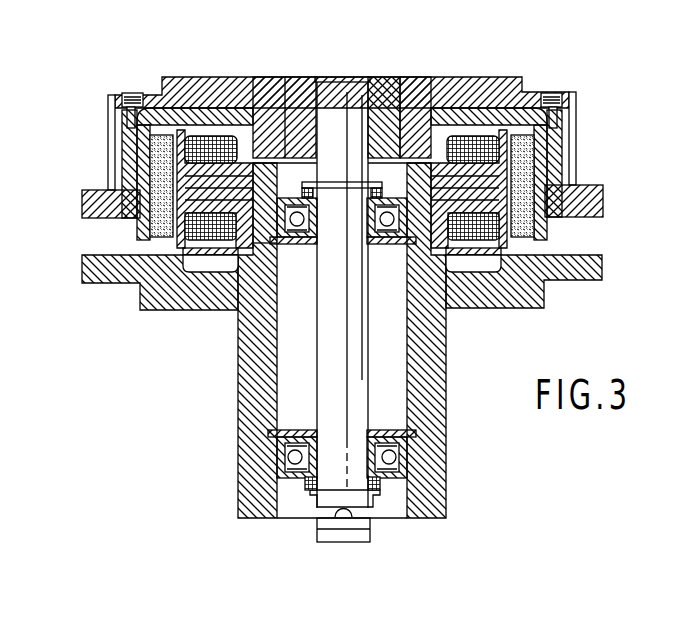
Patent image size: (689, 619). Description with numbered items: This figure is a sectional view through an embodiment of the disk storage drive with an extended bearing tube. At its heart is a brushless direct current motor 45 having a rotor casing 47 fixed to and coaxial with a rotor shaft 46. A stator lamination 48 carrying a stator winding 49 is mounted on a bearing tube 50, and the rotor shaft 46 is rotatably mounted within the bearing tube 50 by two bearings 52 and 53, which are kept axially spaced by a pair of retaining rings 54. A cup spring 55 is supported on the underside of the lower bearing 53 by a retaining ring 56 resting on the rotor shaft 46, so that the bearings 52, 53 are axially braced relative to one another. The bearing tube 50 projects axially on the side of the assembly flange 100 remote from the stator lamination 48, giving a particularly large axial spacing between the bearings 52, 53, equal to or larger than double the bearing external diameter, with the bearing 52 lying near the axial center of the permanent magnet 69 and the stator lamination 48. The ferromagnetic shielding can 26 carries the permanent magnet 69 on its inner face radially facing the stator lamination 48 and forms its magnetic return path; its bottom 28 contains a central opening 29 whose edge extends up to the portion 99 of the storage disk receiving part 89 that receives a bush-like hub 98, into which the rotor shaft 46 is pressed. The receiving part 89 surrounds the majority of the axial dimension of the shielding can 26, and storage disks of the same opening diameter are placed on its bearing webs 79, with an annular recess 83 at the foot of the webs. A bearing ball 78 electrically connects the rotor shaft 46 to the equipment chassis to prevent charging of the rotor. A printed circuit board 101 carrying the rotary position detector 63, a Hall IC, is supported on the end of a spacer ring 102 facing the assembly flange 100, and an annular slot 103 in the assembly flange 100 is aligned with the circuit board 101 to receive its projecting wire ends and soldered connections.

The shielding can 26 is at (140, 152).
The bottom of shielding can 28 is at (207, 112).
The central opening 29 is at (437, 95).
The brushless direct current motor 45 is at (578, 64).
The rotor shaft 46 is at (330, 90).
The rotor casing 47 is at (98, 98).
The stator lamination 48 is at (520, 180).
The stator winding 49 is at (480, 140).
The bearing tube 50 is at (238, 443).
The bearing 52 is at (312, 245).
The bearing 53 is at (407, 458).
The retaining rings 54 is at (407, 245).
The cup spring 55 is at (305, 492).
The retaining ring 56 is at (382, 495).
The Hall IC 63 is at (187, 232).
The permanent magnet 69 is at (150, 177).
The bearing ball 78 is at (343, 518).
The bearing webs 79 is at (572, 140).
The annular recess 83 is at (588, 212).
The storage disk receiving part 89 is at (183, 88).
The bush-like hub 98 is at (385, 95).
The portion of receiving part 99 is at (265, 95).
The assembly flange 100 is at (530, 290).
The printed circuit board 101 is at (480, 262).
The spacer ring 102 is at (244, 268).
The annular slot 103 is at (218, 272).